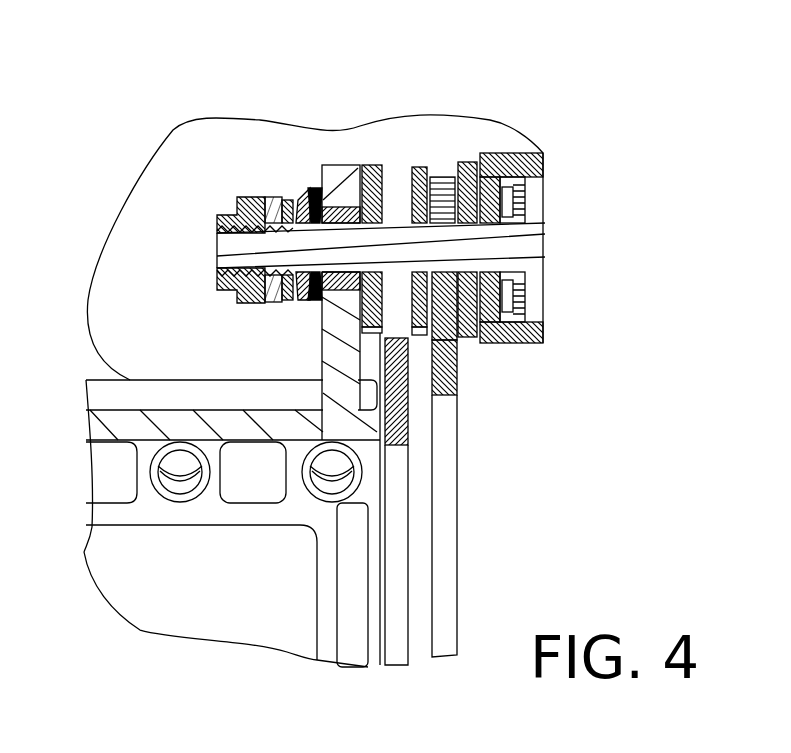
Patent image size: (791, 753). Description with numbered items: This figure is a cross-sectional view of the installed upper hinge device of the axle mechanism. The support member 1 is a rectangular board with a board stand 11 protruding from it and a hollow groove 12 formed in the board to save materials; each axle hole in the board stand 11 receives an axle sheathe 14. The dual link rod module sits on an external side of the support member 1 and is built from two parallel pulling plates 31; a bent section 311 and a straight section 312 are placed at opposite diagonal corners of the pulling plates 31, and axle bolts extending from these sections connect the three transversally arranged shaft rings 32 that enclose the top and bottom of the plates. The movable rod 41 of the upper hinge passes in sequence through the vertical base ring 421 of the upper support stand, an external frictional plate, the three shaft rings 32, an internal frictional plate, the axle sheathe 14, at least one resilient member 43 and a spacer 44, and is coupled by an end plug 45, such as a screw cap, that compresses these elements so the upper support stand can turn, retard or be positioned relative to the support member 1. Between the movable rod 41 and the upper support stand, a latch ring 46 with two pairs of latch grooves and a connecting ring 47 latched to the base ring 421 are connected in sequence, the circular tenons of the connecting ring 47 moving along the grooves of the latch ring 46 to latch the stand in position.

The support member 1 is at (88, 305).
The board stand 11 is at (345, 187).
The hollow groove 12 is at (190, 582).
The axle sheathe 14 is at (312, 296).
The pulling plate 31 is at (440, 470).
The bent section 311 is at (450, 338).
The straight section 312 is at (398, 373).
The shaft ring 32 is at (374, 167).
The movable rod 41 is at (540, 243).
The base ring 421 is at (507, 160).
The resilient member 43 is at (300, 190).
The spacer 44 is at (268, 200).
The end plug 45 is at (220, 215).
The latch ring 46 is at (526, 287).
The connecting ring 47 is at (522, 197).